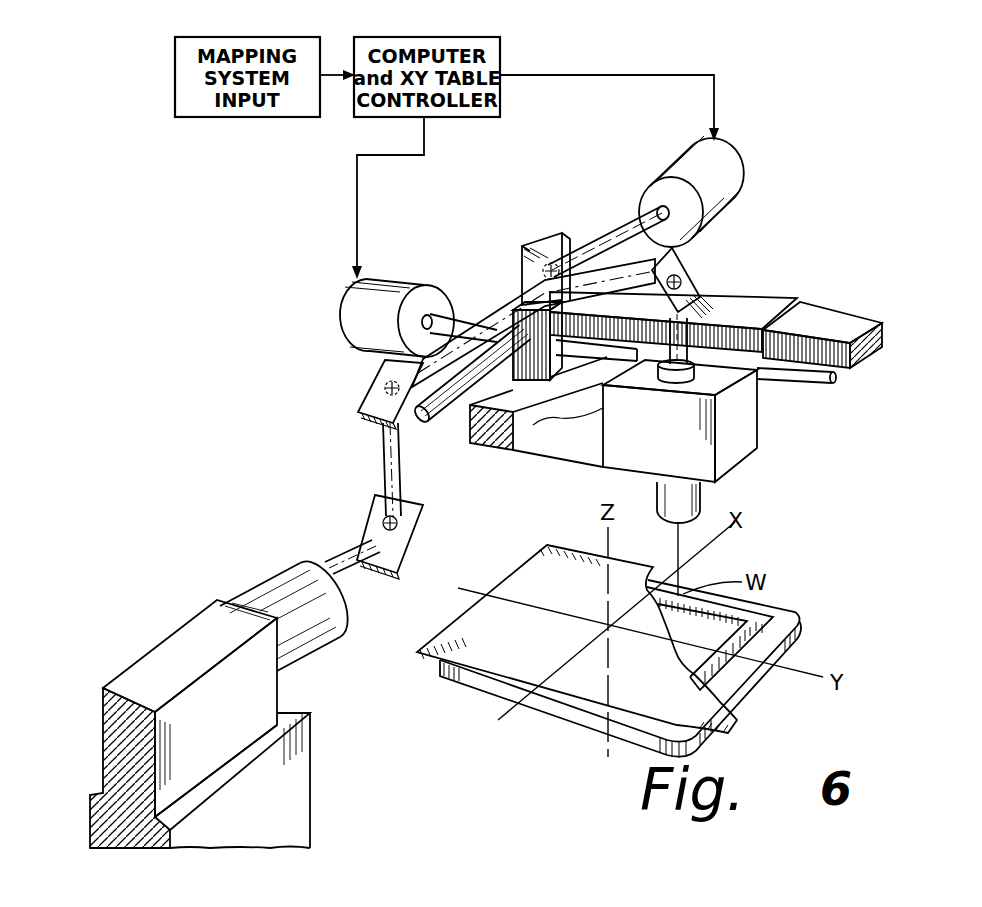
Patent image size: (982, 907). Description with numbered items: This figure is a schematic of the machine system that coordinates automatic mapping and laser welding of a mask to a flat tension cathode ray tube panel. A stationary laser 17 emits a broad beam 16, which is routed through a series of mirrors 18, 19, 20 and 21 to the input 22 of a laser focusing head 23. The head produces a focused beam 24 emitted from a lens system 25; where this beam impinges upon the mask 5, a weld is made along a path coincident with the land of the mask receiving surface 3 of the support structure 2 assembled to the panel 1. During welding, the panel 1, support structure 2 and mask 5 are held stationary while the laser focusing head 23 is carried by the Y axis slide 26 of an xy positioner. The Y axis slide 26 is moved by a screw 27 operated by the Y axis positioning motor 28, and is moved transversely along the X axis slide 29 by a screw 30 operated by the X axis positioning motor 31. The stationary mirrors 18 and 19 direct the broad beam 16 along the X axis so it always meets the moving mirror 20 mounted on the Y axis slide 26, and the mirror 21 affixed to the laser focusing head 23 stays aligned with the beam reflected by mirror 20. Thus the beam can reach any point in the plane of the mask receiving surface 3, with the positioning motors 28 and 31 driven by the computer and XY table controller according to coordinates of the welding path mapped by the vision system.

The panel 1 is at (743, 677).
The support structure 2 is at (747, 643).
The mask receiving surface 3 is at (760, 608).
The mask 5 is at (478, 638).
The broad beam 16 is at (382, 457).
The stationary laser 17 is at (250, 693).
The mirror 18 is at (418, 525).
The mirror 19 is at (373, 387).
The moving mirror 20 is at (548, 240).
The mirror 21 is at (690, 266).
The input 22 is at (697, 378).
The laser focusing head 23 is at (737, 439).
The focused beam 24 is at (682, 571).
The lens system 25 is at (657, 494).
The Y axis slide 26 is at (827, 327).
The screw 27 is at (836, 383).
The Y axis positioning motor 28 is at (395, 283).
The X axis slide 29 is at (538, 446).
The screw 30 is at (447, 422).
The X axis positioning motor 31 is at (668, 172).